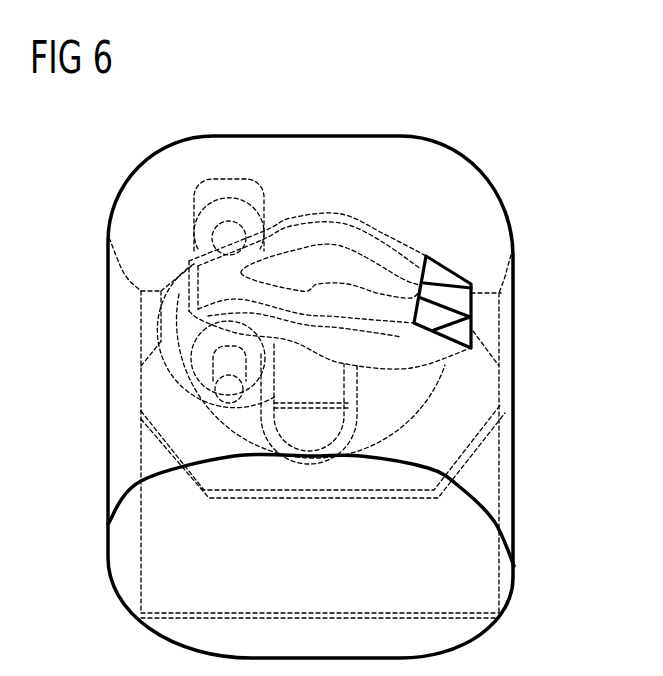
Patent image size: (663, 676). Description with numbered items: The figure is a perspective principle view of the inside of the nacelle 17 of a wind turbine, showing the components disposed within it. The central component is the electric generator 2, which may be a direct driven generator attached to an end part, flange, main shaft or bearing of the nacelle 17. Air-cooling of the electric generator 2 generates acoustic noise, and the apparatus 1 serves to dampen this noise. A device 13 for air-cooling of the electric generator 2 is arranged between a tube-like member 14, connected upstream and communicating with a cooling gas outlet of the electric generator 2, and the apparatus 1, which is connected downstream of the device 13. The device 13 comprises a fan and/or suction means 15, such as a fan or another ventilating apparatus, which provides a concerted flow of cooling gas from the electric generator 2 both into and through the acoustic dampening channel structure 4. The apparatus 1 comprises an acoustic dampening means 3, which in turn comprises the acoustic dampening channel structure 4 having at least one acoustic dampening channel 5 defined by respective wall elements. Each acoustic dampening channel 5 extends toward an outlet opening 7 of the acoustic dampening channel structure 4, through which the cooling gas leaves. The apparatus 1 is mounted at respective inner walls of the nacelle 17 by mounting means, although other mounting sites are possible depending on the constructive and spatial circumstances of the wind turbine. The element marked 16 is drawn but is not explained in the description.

The apparatus 1 is at (378, 380).
The electric generator 2 is at (225, 187).
The acoustic dampening means 3 is at (375, 227).
The acoustic dampening channel structure 4 is at (406, 224).
The acoustic dampening channel 5 is at (327, 303).
The outlet opening 7 is at (462, 300).
The device for air-cooling 13 is at (173, 303).
The tube-like member 14 is at (222, 235).
The fan and/or suction means 15 is at (222, 359).
The magnet carrier 16 is at (448, 257).
The nacelle 17 is at (513, 477).